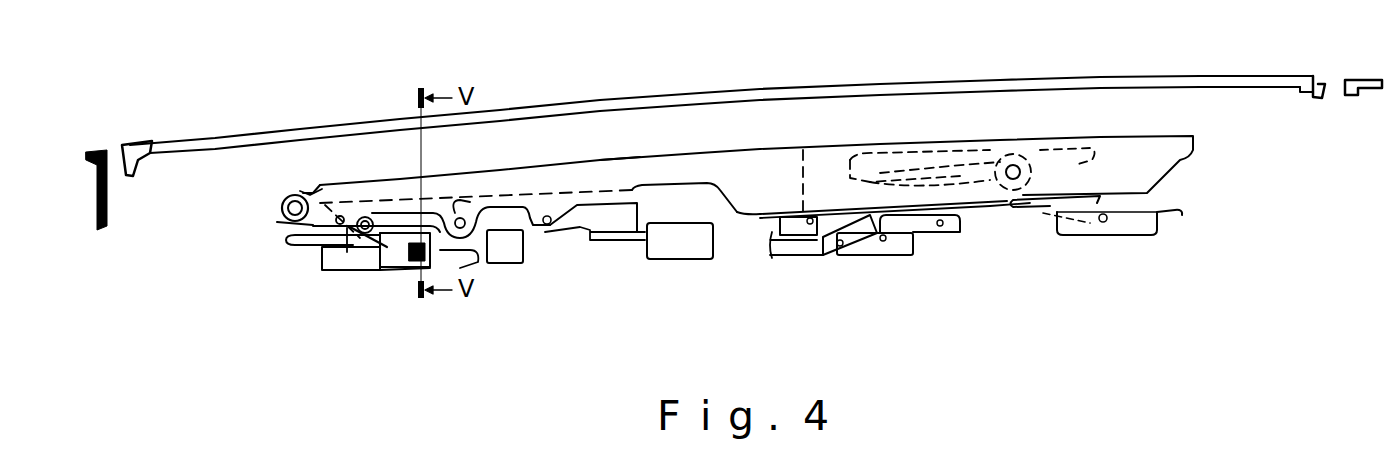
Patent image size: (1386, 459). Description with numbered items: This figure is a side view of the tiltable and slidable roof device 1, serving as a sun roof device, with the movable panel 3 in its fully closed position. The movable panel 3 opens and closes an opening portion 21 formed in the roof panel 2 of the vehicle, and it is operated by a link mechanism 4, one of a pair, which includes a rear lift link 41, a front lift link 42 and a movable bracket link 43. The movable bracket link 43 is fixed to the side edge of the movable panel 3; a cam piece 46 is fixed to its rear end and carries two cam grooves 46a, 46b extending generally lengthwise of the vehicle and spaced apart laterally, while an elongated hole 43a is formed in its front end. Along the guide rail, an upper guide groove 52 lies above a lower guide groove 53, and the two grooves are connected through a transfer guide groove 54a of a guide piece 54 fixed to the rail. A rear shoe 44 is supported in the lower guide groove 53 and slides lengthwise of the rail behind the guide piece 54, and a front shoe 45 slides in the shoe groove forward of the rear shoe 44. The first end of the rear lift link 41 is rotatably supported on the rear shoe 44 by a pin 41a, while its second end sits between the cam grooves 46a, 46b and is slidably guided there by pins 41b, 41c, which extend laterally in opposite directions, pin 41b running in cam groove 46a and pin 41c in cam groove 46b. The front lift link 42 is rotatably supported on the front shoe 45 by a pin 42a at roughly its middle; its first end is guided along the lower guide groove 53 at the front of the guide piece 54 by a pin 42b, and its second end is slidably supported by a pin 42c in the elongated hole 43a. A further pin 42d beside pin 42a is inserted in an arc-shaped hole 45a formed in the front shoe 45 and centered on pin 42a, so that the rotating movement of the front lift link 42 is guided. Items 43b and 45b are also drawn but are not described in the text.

The tiltable and slidable roof device 1 is at (1190, 74).
The roof panel 2 is at (93, 152).
The movable panel 3 is at (712, 102).
The link mechanism 4 is at (982, 226).
The opening portion 21 is at (1348, 80).
The rear lift link 41 is at (1022, 212).
The pin 41a is at (1097, 227).
The pin 41b is at (976, 165).
The pin 41c is at (1012, 165).
The front lift link 42 is at (398, 214).
The pin 42a is at (325, 244).
The pin 42b is at (408, 270).
The pin 42c is at (303, 194).
The pin 42d is at (347, 255).
The movable bracket link 43 is at (622, 178).
The elongated hole 43a is at (283, 222).
The bracket pin 43b is at (470, 210).
The rear shoe 44 is at (1143, 228).
The front shoe 45 is at (510, 225).
The arc-shaped hole 45a is at (362, 216).
The link arm pin 45b is at (463, 215).
The cam piece 46 is at (810, 165).
The cam groove 46a is at (860, 175).
The cam groove 46b is at (920, 178).
The upper guide groove 52 is at (940, 229).
The lower guide groove 53 is at (470, 256).
The guide piece 54 is at (877, 256).
The transfer guide groove 54a is at (838, 255).